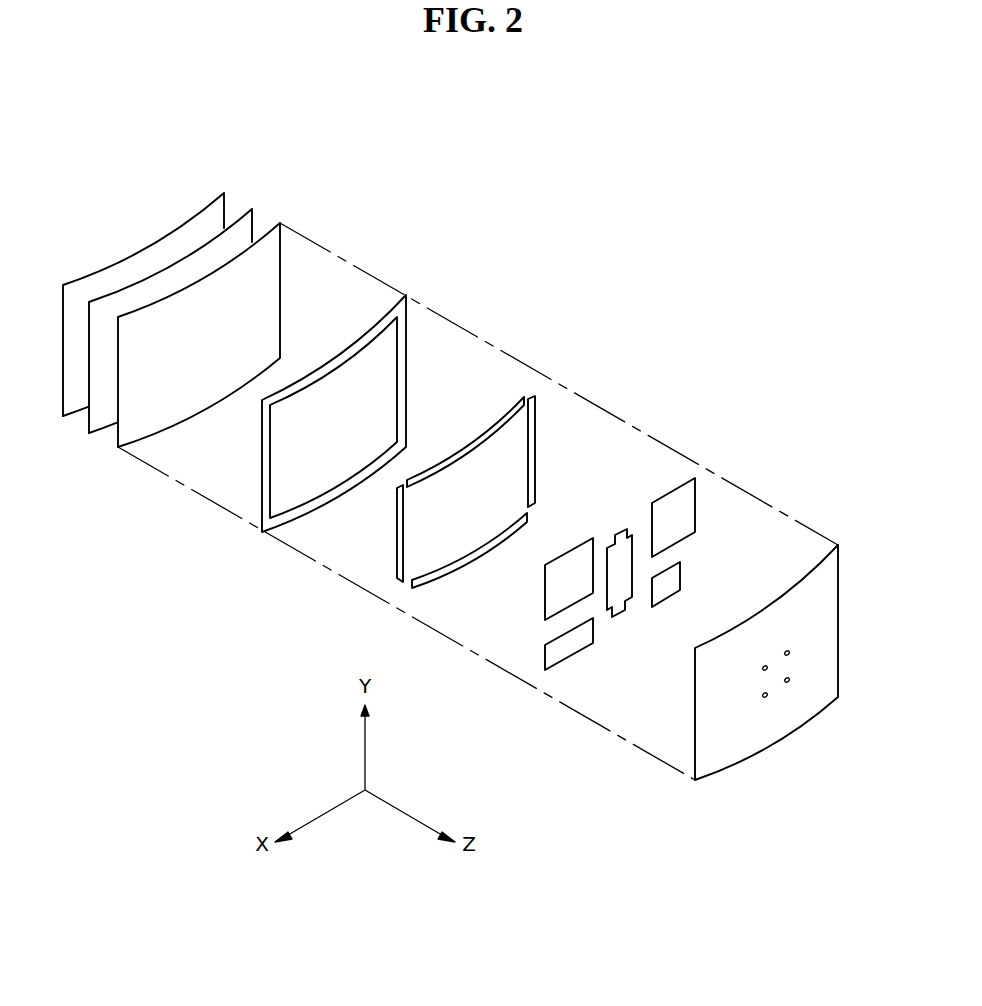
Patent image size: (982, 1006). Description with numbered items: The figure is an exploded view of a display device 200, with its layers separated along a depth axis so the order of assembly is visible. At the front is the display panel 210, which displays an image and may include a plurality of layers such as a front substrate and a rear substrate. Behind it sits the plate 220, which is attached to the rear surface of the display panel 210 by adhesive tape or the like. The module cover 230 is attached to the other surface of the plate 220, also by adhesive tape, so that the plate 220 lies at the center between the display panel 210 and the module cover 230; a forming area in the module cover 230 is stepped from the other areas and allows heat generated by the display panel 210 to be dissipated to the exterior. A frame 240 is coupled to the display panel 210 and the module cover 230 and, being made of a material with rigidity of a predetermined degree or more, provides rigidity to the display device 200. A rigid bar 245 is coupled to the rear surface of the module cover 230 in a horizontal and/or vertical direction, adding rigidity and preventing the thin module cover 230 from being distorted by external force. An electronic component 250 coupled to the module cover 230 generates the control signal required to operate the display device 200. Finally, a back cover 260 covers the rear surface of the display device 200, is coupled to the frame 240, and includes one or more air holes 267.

The display device 200 is at (118, 215).
The display panel 210 is at (222, 197).
The plate 220 is at (249, 220).
The module cover 230 is at (274, 245).
The frame 240 is at (408, 304).
The rigid bar 245 is at (545, 410).
The electronic component 250 is at (682, 478).
The back cover 260 is at (733, 750).
The air holes 267 is at (770, 698).